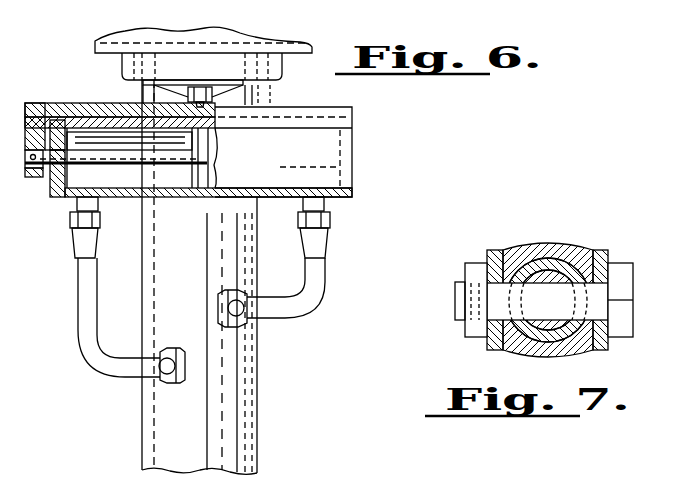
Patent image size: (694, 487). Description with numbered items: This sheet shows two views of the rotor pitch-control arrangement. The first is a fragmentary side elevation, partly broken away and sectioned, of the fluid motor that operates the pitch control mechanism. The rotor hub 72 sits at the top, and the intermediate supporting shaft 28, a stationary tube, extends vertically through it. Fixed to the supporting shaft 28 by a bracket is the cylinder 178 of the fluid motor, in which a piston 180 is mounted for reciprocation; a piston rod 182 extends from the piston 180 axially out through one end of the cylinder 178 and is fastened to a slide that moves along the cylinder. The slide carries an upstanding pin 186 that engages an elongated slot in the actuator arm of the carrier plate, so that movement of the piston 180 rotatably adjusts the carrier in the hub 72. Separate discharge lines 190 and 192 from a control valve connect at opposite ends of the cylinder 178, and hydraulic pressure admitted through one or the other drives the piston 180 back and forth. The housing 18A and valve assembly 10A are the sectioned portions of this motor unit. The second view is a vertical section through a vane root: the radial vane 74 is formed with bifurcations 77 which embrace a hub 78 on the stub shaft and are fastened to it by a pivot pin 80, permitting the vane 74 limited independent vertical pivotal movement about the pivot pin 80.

In FIG. 6, the hub 72 is at (100, 42).
In FIG. 6, the valve assembly 10A is at (186, 96).
In FIG. 6, the valve housing 18A is at (58, 103).
In FIG. 6, the upstanding pin 186 is at (198, 88).
In FIG. 6, the cylinder 178 is at (312, 112).
In FIG. 6, the piston rod 182 is at (86, 156).
In FIG. 6, the piston 180 is at (203, 154).
In FIG. 6, the discharge line 190 is at (85, 279).
In FIG. 6, the discharge line 192 is at (315, 268).
In FIG. 6, the supporting shaft 28 is at (234, 411).
In FIG. 7, the vane 74 is at (553, 352).
In FIG. 7, the hub 78 is at (548, 250).
In FIG. 7, the pivot pin 80 is at (547, 301).
In FIG. 7, the bifurcations 77 is at (487, 253).